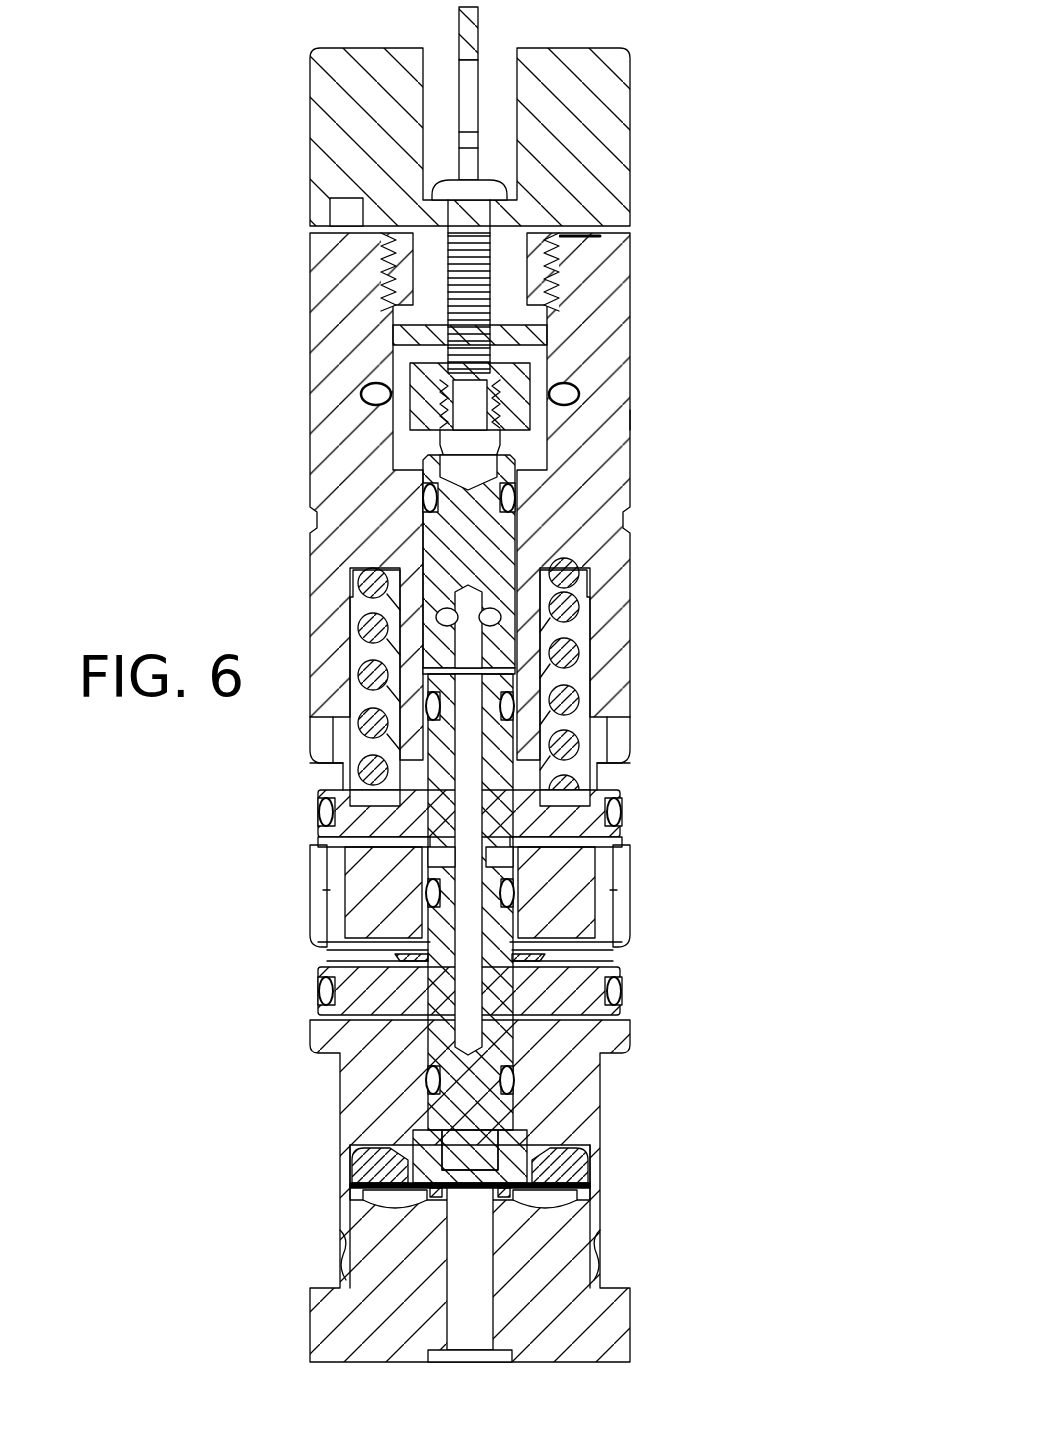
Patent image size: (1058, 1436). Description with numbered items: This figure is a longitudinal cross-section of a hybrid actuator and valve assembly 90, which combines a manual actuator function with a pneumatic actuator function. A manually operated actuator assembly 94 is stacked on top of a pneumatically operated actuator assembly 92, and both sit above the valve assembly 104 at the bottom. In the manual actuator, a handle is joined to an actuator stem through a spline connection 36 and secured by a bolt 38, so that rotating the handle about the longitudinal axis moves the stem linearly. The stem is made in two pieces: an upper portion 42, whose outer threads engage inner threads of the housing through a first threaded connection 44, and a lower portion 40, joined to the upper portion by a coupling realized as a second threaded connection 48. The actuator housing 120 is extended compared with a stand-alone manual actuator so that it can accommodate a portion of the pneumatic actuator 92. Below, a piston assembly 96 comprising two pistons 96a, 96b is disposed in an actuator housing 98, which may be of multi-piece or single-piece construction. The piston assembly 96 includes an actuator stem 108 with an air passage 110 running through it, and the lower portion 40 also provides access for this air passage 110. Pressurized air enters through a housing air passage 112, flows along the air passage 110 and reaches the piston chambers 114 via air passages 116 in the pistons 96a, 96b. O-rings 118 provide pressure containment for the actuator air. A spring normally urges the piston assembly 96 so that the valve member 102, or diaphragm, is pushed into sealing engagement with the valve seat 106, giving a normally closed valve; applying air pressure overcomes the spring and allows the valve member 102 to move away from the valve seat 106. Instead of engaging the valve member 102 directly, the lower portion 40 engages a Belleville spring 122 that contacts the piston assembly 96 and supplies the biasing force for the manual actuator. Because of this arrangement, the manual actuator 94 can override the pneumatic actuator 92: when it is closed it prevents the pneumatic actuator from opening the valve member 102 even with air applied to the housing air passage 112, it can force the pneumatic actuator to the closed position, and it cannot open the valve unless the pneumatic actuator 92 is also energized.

The hybrid actuator and valve assembly 90 is at (733, 150).
The manually operated actuator assembly 94 is at (237, 220).
The pneumatically operated actuator assembly 92 is at (237, 883).
The valve assembly 104 is at (282, 1173).
The spline connection 36 is at (452, 236).
The bolt 38 is at (482, 230).
The first threaded connection 44 is at (567, 281).
The second or upper portion of the actuator stem 42 is at (530, 338).
The first or lower portion of the actuator stem 40 is at (517, 383).
The second threaded connection 48 is at (418, 417).
The actuator housing 120 is at (630, 420).
The O-rings 118 is at (513, 503).
The actuator stem 108 is at (505, 568).
The air passage 110 is at (463, 638).
The housing air passage 112 is at (447, 612).
The Belleville spring 122 is at (492, 624).
The piston 96a is at (590, 802).
The piston 96b is at (582, 1005).
The piston assembly 96 is at (533, 910).
The piston chambers 114 is at (607, 842).
The air passages 116 is at (473, 990).
The actuator housing 98 is at (597, 1135).
The valve member 102 is at (540, 1188).
The valve seat 106 is at (445, 1193).